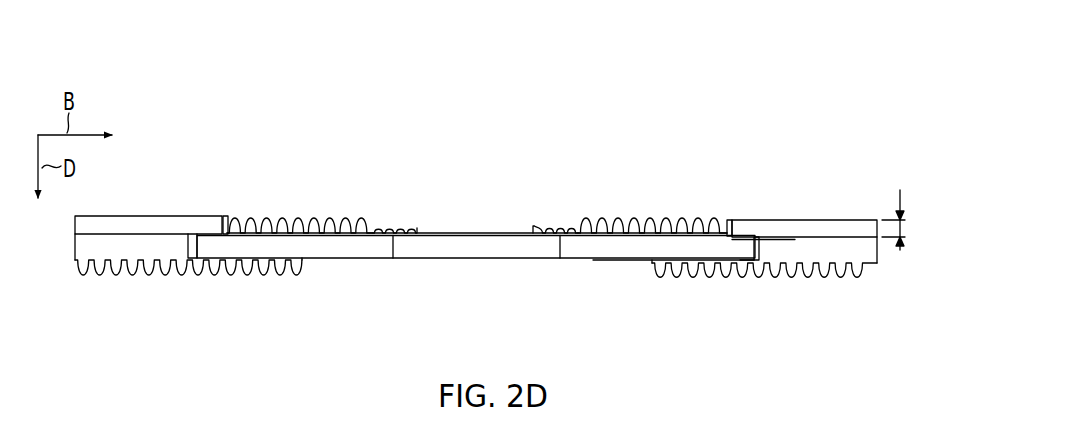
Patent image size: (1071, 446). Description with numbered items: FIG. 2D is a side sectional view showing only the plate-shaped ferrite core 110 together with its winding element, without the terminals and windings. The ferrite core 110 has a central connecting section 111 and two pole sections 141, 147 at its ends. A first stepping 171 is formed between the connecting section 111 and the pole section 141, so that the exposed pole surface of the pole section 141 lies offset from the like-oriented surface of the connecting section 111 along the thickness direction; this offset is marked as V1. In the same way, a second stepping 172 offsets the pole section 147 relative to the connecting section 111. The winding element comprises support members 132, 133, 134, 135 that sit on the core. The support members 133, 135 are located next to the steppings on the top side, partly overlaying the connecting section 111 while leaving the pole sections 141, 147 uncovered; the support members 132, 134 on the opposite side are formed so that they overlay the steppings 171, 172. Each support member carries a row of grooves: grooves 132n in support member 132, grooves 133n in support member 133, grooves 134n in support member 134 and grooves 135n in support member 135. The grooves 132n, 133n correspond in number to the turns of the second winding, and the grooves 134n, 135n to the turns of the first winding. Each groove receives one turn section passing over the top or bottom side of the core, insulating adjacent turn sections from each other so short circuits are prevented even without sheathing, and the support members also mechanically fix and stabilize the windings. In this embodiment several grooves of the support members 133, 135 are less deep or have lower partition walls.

The plate-shaped ferrite core 110 is at (488, 201).
The connecting section 111 is at (486, 259).
The support member 132 is at (878, 263).
The grooves 132n is at (836, 280).
The support member 133 is at (727, 222).
The grooves 133n is at (638, 216).
The support member 134 is at (74, 262).
The grooves 134n is at (168, 276).
The support member 135 is at (418, 228).
The grooves 135n is at (331, 216).
The pole section 141 is at (123, 215).
The pole section 147 is at (837, 219).
The first stepping 171 is at (233, 210).
The second stepping 172 is at (764, 250).
The offset V1 is at (905, 228).